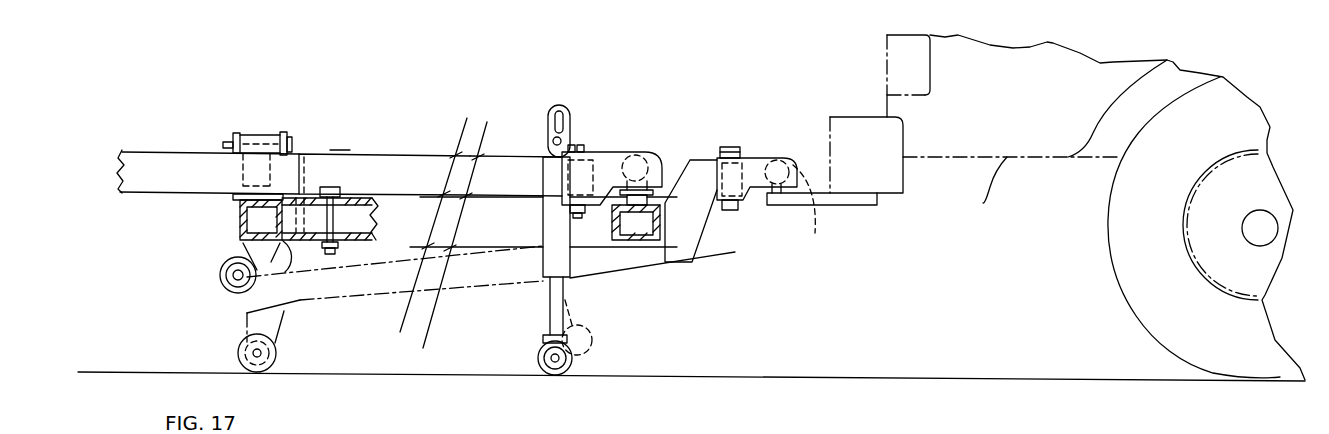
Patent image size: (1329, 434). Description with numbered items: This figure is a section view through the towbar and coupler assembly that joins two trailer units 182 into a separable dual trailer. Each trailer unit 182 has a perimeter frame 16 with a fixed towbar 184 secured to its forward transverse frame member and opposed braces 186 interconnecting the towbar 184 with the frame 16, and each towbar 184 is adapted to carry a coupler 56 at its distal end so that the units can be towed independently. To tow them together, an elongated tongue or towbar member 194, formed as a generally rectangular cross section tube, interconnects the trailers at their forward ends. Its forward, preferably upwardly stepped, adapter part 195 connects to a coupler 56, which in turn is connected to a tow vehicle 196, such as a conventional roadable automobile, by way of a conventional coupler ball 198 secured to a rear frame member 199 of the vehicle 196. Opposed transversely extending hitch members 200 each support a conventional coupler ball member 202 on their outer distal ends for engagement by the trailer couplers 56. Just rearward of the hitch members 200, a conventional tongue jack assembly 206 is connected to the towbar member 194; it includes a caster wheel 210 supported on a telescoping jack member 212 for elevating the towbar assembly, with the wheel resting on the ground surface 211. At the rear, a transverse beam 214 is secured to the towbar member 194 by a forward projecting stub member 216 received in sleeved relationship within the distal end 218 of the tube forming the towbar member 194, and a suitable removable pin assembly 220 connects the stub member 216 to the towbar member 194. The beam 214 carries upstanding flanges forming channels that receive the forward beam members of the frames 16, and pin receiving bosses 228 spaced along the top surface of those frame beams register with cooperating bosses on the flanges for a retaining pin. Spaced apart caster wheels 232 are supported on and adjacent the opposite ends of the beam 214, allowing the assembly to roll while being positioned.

The perimeter frame 16 is at (190, 152).
The coupler 56 is at (632, 152).
The trailer unit 182 is at (339, 133).
The towbar 184 is at (515, 158).
The brace 186 is at (373, 158).
The towbar member 194 is at (393, 262).
The adapter part 195 is at (687, 233).
The tow vehicle 196 is at (983, 203).
The coupler ball 198 is at (815, 233).
The rear frame member 199 is at (870, 207).
The hitch member 200 is at (647, 247).
The coupler ball member 202 is at (648, 158).
The jack assembly 206 is at (547, 215).
The caster wheel 210 is at (538, 360).
The ground surface 211 is at (340, 372).
The telescoping jack member 212 is at (548, 303).
The transverse beam 214 is at (240, 224).
The stub member 216 is at (267, 272).
The distal end 218 is at (312, 243).
The pin assembly 220 is at (335, 190).
The pin receiving boss 228 is at (281, 103).
The caster wheel 232 is at (220, 276).